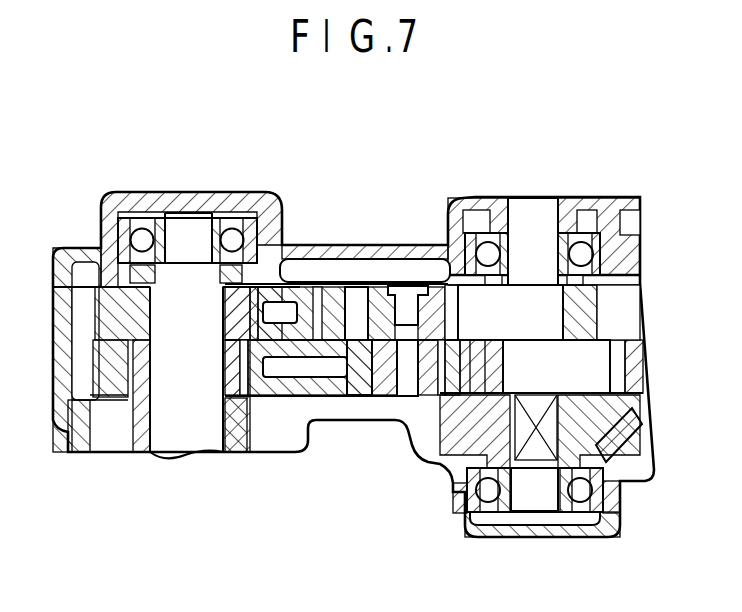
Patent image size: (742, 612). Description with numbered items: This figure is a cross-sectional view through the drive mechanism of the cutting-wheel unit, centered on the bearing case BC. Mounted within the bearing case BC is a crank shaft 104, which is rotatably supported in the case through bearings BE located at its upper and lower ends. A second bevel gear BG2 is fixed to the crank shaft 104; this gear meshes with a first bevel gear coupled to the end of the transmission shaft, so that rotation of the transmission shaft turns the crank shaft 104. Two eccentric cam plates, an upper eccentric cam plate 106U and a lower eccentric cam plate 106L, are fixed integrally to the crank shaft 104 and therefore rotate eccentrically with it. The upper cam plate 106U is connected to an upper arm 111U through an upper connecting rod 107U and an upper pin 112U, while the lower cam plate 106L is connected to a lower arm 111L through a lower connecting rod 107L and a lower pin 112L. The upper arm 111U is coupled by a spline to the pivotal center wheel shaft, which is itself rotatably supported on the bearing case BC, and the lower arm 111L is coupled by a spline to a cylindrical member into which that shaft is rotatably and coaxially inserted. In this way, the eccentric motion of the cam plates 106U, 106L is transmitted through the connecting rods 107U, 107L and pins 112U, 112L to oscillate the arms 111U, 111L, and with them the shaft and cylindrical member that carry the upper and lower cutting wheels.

The bearing BE is at (233, 235).
The crank shaft 104 is at (547, 217).
The upper eccentric cam plate 106U is at (550, 313).
The lower eccentric cam plate 106L is at (590, 355).
The second bevel gear BG2 is at (610, 424).
The bearing case BC is at (317, 250).
The upper arm 111U is at (280, 300).
The lower arm 111L is at (316, 387).
The upper pin 112U is at (362, 300).
The lower pin 112L is at (384, 388).
The upper connecting rod 107U is at (412, 303).
The lower connecting rod 107L is at (388, 392).